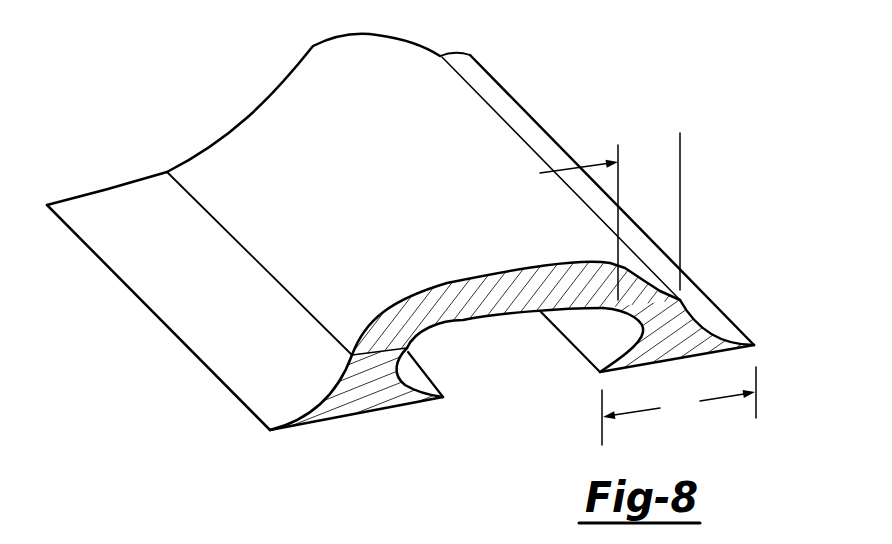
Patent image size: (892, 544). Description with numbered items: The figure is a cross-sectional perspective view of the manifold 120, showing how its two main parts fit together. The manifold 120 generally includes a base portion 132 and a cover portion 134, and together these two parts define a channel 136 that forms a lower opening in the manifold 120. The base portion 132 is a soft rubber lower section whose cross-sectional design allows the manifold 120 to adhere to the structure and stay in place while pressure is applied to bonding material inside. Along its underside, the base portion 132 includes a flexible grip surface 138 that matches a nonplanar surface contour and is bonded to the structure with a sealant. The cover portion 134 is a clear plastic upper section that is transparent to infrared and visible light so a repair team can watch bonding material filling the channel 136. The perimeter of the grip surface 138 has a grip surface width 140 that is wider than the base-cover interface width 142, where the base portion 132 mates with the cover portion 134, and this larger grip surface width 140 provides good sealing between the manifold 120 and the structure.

The manifold 120 is at (172, 89).
The base portion 132 is at (157, 317).
The cover portion 134 is at (298, 63).
The channel 136 is at (503, 370).
The grip surface 138 is at (367, 412).
The grip surface width 140 is at (679, 406).
The base-cover interface width 142 is at (692, 146).